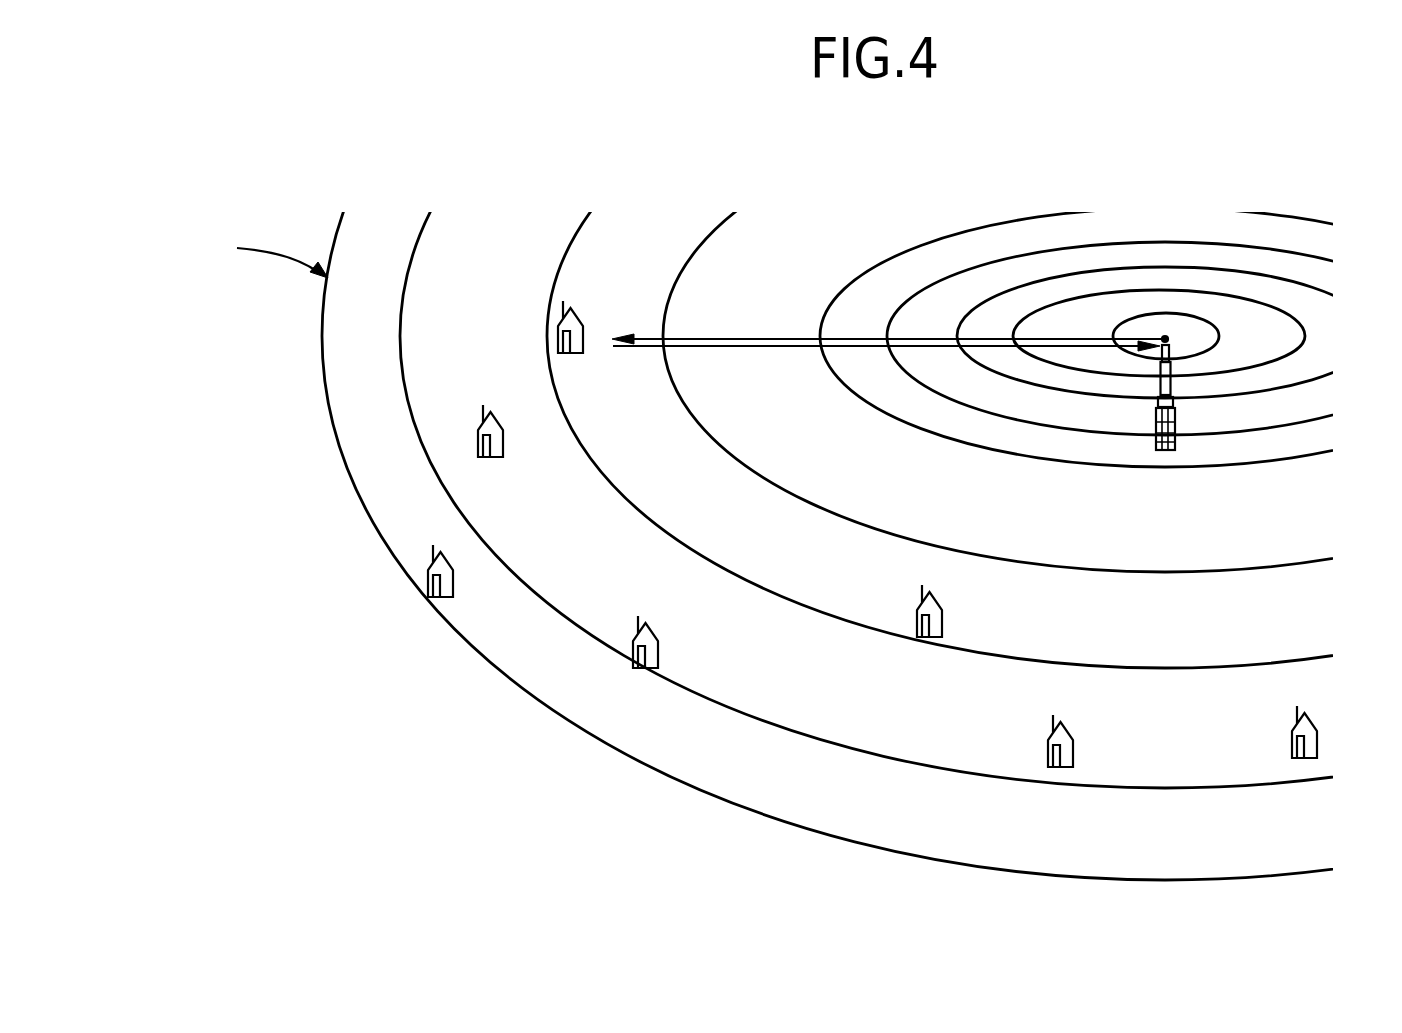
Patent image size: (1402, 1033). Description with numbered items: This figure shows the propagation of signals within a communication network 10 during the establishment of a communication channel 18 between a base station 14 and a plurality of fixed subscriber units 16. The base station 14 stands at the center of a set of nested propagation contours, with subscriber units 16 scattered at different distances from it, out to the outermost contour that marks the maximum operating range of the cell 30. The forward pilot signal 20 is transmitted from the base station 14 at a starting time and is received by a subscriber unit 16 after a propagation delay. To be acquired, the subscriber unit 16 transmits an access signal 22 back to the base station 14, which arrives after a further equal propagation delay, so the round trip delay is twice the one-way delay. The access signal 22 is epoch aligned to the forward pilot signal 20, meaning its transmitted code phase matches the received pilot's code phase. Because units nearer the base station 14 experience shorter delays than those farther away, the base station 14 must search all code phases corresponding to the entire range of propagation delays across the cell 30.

The communication network 10 is at (248, 670).
The base station 14 is at (1175, 440).
The subscriber unit 16 is at (583, 344).
The communication channel 18 is at (769, 319).
The forward pilot signal 20 is at (850, 338).
The access signal 22 is at (833, 348).
The cell 30 is at (336, 440).